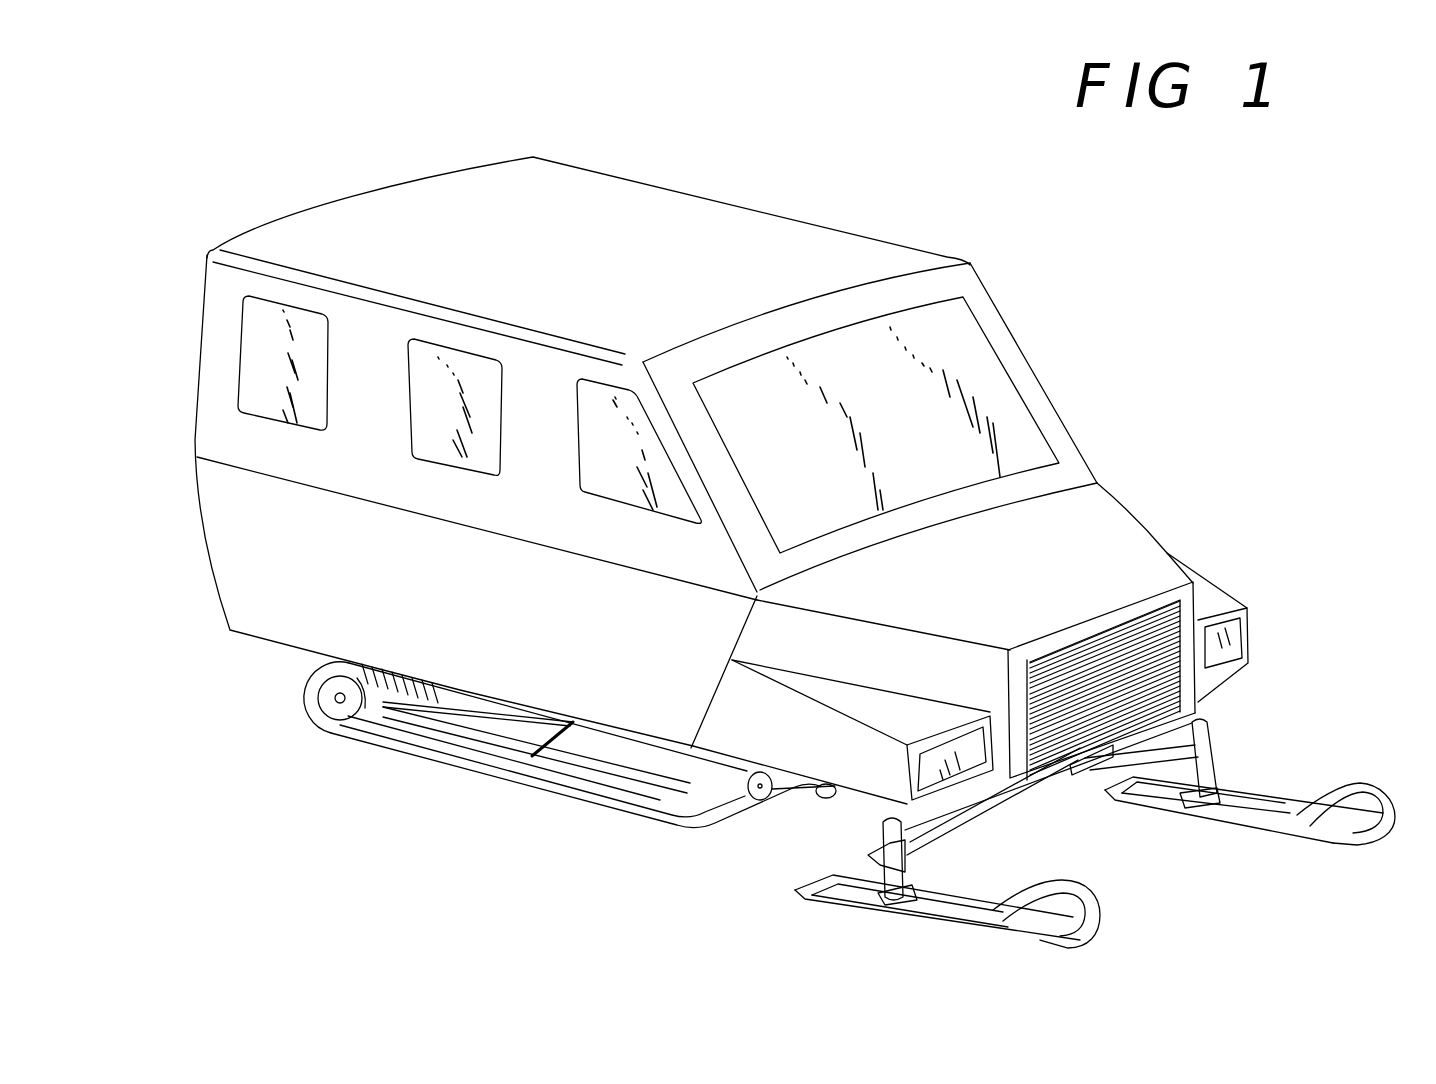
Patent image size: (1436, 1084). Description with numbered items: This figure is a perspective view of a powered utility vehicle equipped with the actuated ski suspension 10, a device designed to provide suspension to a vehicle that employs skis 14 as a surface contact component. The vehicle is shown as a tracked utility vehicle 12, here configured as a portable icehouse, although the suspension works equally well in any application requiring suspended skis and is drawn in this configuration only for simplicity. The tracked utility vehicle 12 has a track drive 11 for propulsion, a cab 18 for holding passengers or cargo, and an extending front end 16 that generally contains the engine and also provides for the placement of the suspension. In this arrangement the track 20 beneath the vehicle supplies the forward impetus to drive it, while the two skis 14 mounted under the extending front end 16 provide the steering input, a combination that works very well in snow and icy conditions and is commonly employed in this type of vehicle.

The actuated ski suspension 10 is at (1253, 717).
The track drive 11 is at (367, 768).
The tracked utility vehicle 12 is at (277, 643).
The skis 14 is at (1105, 900).
The extending front end 16 is at (1125, 498).
The cab 18 is at (760, 203).
The track 20 is at (503, 780).